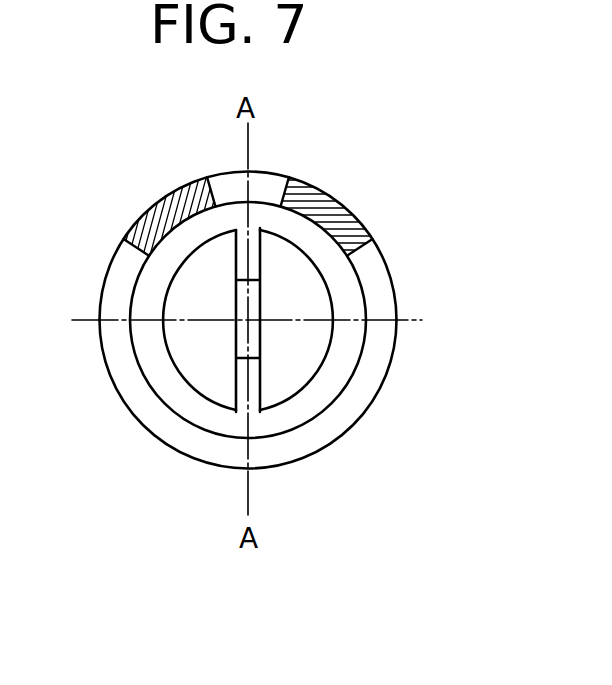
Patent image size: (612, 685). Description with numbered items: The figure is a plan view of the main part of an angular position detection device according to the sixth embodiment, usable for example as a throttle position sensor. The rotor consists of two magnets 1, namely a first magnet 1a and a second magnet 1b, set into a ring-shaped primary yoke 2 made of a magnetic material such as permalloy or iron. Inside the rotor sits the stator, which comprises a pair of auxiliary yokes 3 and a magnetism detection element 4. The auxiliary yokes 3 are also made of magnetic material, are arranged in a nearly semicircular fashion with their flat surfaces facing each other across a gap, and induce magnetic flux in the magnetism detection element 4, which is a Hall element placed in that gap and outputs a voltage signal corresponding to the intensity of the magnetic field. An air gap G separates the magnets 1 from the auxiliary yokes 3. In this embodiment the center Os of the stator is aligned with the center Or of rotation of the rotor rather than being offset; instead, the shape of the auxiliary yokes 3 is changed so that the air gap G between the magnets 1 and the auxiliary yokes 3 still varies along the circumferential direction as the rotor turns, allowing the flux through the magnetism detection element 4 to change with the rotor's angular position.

The magnets 1 is at (241, 200).
The first magnet 1a is at (162, 200).
The second magnet 1b is at (328, 197).
The primary yoke 2 is at (122, 262).
The auxiliary yokes 3 is at (187, 372).
The magnetism detection element 4 is at (240, 350).
The air gap G is at (317, 247).
The center of rotation of the rotor Or is at (375, 292).
The center of the stator Os is at (250, 318).